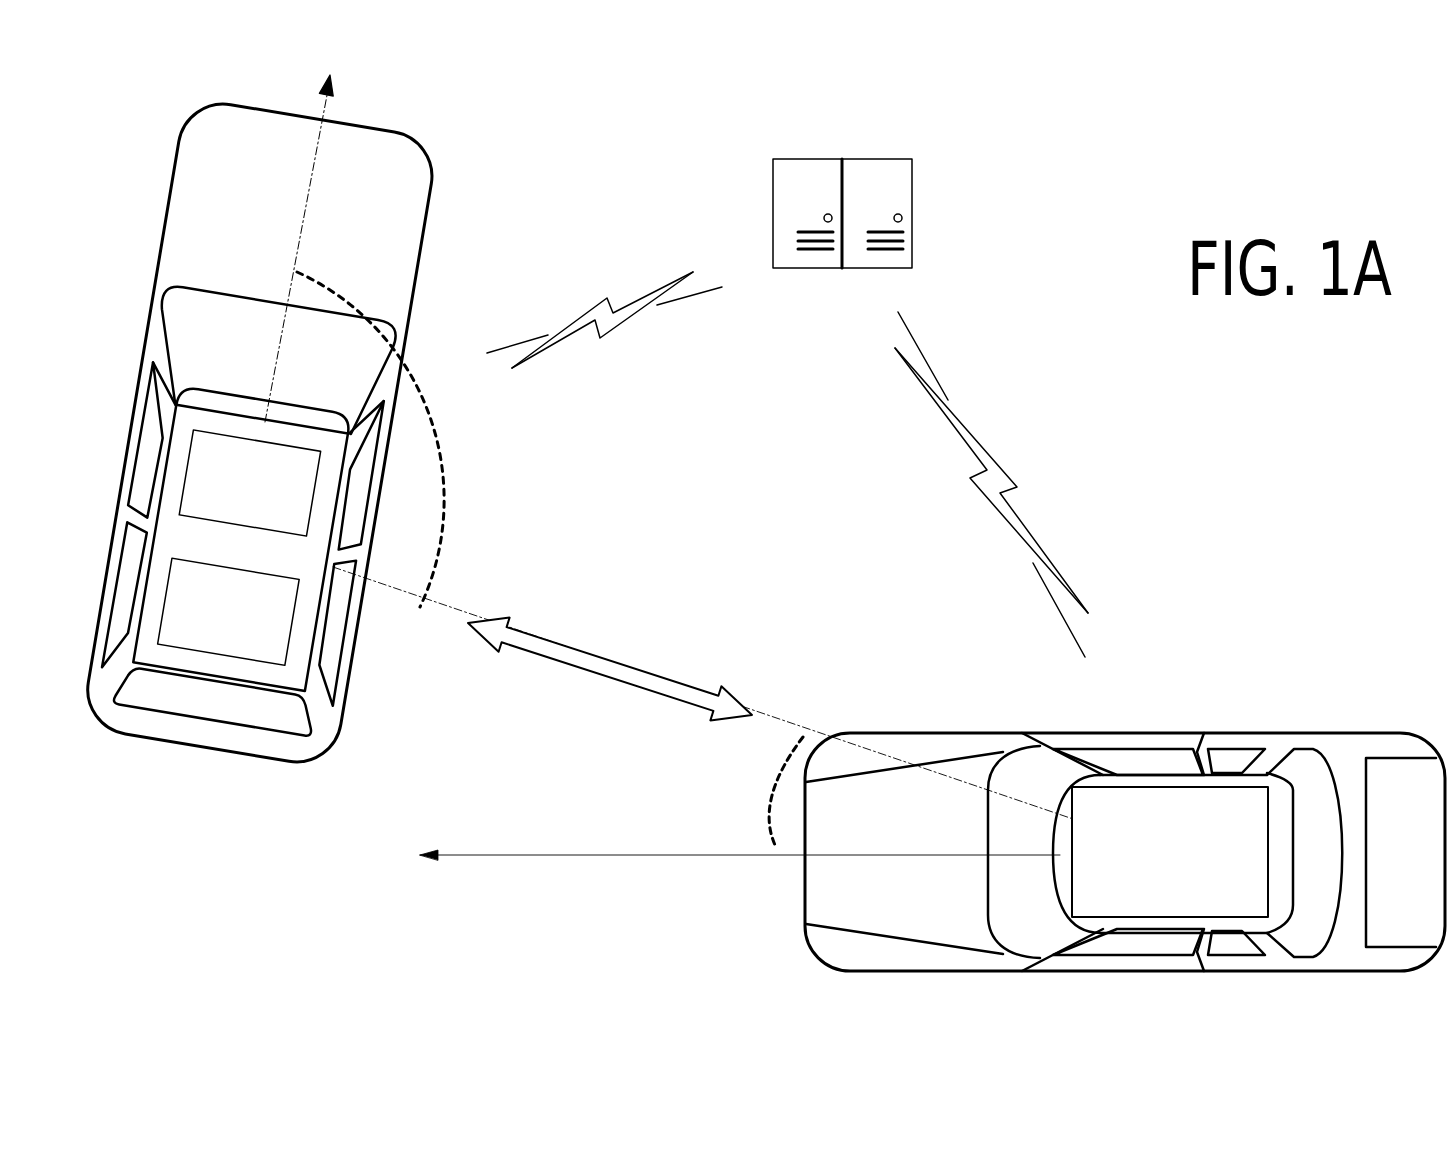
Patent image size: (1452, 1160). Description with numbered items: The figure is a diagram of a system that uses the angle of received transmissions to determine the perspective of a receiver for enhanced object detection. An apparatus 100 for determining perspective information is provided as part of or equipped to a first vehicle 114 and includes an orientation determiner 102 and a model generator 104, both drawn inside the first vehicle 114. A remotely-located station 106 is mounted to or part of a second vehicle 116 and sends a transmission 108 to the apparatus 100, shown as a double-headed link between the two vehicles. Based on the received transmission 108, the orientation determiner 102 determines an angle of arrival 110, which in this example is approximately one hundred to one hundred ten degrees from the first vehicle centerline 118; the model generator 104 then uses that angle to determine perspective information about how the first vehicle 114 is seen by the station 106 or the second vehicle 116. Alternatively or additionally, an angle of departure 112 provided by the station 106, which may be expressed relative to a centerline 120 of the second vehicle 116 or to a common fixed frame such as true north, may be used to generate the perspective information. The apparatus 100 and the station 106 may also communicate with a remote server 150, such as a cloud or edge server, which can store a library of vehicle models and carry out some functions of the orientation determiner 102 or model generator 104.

The apparatus 100 is at (292, 433).
The orientation determiner 102 is at (249, 483).
The model generator 104 is at (229, 611).
The station 106 is at (1190, 865).
The transmission 108 is at (650, 672).
The angle of arrival 110 is at (443, 462).
The angle of departure 112 is at (770, 798).
The first vehicle 114 is at (413, 188).
The second vehicle 116 is at (1093, 852).
The first vehicle centerline 118 is at (325, 140).
The centerline of second vehicle 120 is at (538, 853).
The remote server 150 is at (907, 218).